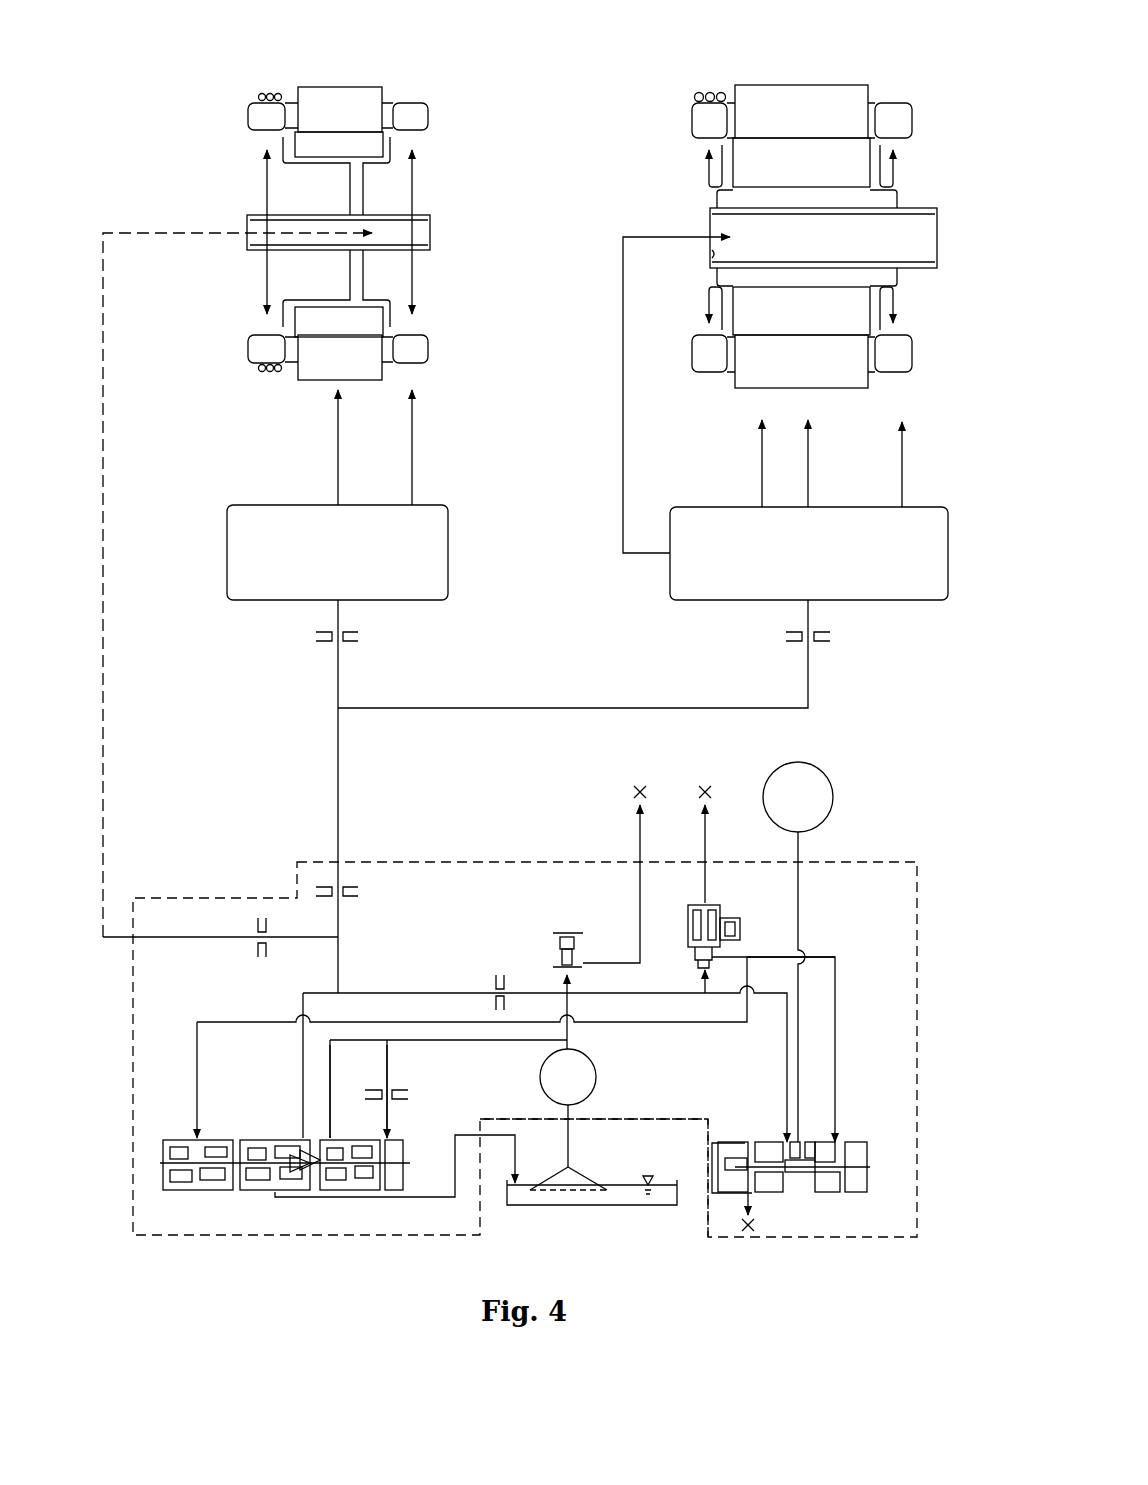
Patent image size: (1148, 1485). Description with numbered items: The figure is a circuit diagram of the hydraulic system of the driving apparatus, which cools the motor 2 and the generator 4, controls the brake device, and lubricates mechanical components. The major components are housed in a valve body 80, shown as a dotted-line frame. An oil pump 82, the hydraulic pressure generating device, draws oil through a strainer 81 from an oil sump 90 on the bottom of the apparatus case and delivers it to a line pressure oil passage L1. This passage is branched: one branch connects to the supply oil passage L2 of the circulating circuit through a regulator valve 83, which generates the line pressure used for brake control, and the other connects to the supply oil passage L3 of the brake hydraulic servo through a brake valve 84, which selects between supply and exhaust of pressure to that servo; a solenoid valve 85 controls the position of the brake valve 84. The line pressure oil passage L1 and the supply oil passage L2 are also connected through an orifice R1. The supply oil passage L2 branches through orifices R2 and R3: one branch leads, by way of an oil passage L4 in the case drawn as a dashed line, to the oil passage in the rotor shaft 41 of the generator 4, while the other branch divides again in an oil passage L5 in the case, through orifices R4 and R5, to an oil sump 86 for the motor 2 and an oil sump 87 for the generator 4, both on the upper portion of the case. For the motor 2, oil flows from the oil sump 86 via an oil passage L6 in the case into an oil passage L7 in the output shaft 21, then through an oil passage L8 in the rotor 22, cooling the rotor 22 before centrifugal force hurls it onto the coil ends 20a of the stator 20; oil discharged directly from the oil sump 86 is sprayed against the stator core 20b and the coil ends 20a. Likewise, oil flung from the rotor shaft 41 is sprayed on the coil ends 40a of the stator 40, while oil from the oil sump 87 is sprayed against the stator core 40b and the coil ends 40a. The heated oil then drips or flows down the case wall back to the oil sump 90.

The generator 4 is at (338, 85).
The stator 40 is at (383, 91).
The coil ends 40a is at (248, 118).
The stator core 40b is at (312, 383).
The rotor shaft 41 is at (431, 228).
The motor 2 is at (799, 82).
The stator 20 is at (872, 92).
The coil ends 20a is at (692, 125).
The stator core 20b is at (843, 388).
The output shaft 21 is at (710, 222).
The rotor 22 is at (803, 200).
The oil passage L8 is at (780, 182).
The oil passage L7 is at (712, 254).
The oil passage L6 is at (623, 406).
The oil sump 87 is at (320, 570).
The oil sump 86 is at (790, 572).
The orifice R5 is at (338, 642).
The orifice R4 is at (808, 642).
The oil passage L5 is at (520, 710).
The oil passage L4 is at (108, 733).
The supply oil passage L2 is at (340, 952).
The orifice R2 is at (340, 896).
The orifice R3 is at (268, 937).
The orifice R1 is at (492, 990).
The line pressure oil passage L1 is at (572, 1030).
The supply oil passage L3 is at (803, 908).
The valve body 80 is at (485, 862).
The solenoid valve 85 is at (723, 895).
The oil pump 82 is at (596, 1084).
The strainer 81 is at (582, 1180).
The oil sump 90 is at (665, 1194).
The regulator valve 83 is at (412, 1158).
The brake valve 84 is at (872, 1168).